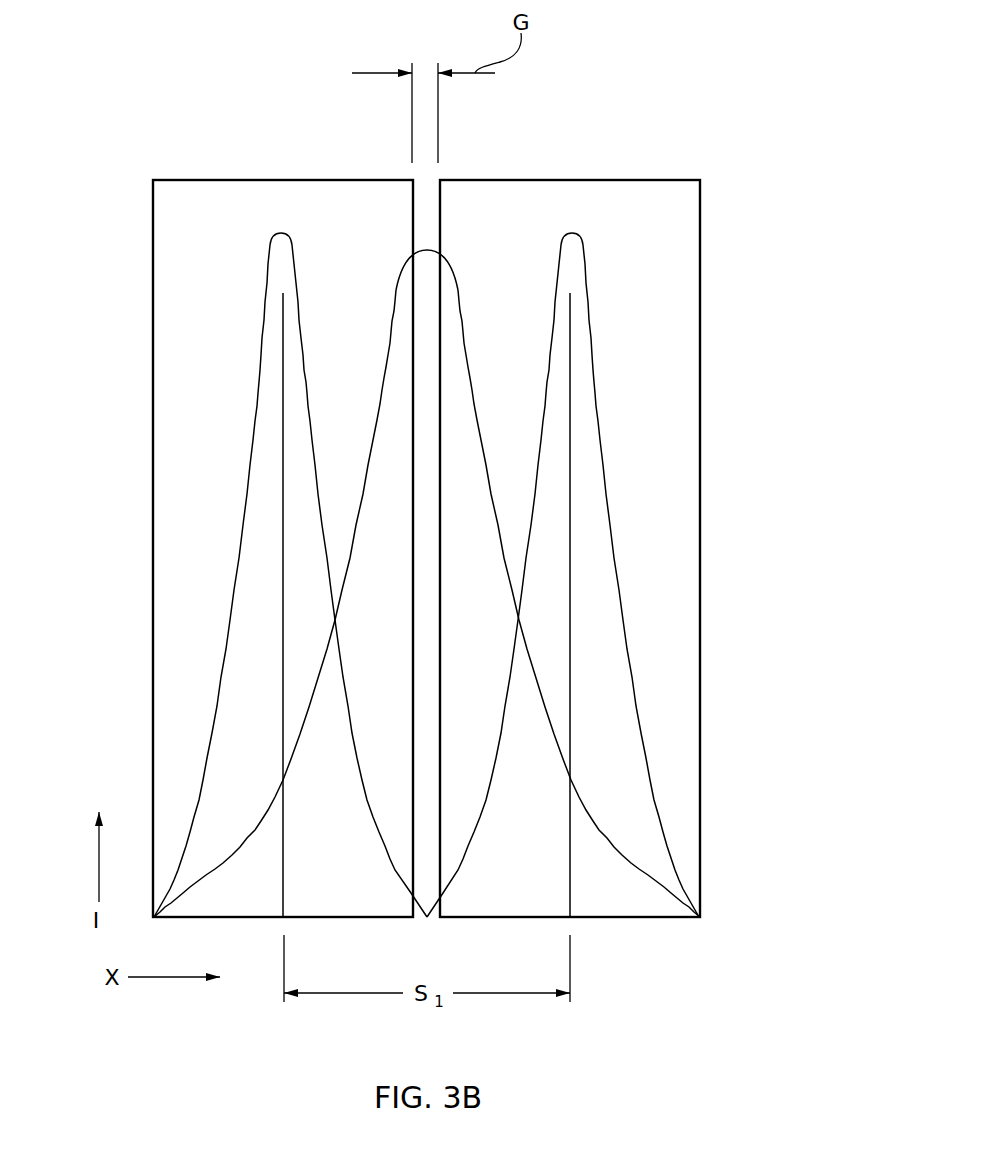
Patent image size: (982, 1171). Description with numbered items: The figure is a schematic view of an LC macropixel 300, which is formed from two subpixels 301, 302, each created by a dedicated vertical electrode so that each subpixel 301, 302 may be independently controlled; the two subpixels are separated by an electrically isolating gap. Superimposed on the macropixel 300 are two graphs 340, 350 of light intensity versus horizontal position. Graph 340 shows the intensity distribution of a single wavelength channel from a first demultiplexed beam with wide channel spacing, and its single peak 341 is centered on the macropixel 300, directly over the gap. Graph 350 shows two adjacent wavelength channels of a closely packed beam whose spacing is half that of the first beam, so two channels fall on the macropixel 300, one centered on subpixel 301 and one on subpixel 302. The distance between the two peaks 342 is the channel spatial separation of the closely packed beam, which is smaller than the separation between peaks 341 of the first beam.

The macropixel 300 is at (722, 113).
The subpixel 301 is at (153, 320).
The subpixel 302 is at (700, 353).
The graph 340 is at (427, 565).
The peak 341 is at (440, 258).
The peak 342 is at (291, 236).
The graph 350 is at (426, 568).